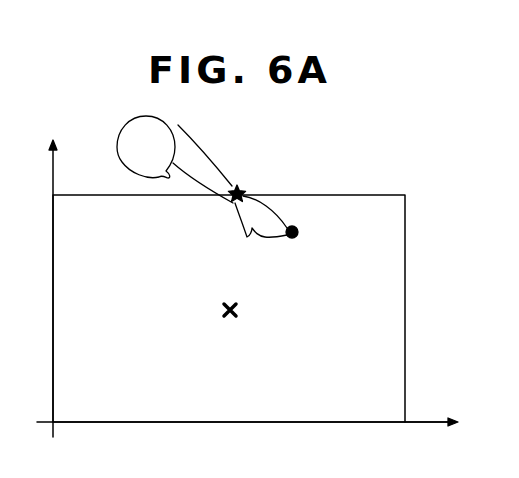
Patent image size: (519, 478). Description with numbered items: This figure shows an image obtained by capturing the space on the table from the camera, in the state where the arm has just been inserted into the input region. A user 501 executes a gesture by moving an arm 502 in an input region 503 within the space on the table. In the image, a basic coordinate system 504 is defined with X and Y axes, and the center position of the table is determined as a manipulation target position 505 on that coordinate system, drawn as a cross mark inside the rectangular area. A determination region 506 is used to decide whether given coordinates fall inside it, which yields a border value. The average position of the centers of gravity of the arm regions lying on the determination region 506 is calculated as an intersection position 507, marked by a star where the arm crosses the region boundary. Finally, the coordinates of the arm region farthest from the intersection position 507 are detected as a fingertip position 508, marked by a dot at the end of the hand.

The user 501 is at (120, 128).
The arm 502 is at (193, 133).
The input region 503 is at (97, 417).
The basic coordinate system 504 is at (421, 423).
The manipulation target position 505 is at (232, 318).
The determination region 506 is at (366, 195).
The intersection position 507 is at (237, 204).
The fingertip position 508 is at (292, 238).